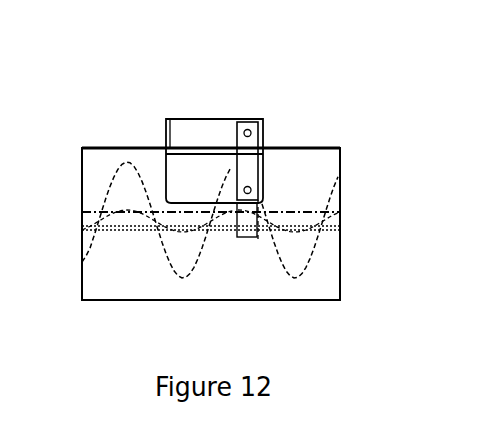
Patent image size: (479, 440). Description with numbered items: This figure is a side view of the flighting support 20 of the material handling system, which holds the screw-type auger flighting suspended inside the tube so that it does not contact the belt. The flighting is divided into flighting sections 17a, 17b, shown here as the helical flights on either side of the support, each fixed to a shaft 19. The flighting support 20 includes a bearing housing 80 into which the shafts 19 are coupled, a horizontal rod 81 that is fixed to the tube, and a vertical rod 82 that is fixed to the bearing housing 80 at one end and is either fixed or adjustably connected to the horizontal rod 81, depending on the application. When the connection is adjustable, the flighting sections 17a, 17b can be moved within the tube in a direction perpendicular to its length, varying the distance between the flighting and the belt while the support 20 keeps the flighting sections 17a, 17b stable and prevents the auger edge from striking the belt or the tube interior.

The flighting support 20 is at (253, 78).
The flighting section 17a is at (97, 151).
The flighting section 17b is at (330, 268).
The shaft 19 is at (131, 224).
The bearing housing 80 is at (249, 225).
The horizontal rod 81 is at (185, 128).
The vertical rod 82 is at (246, 150).